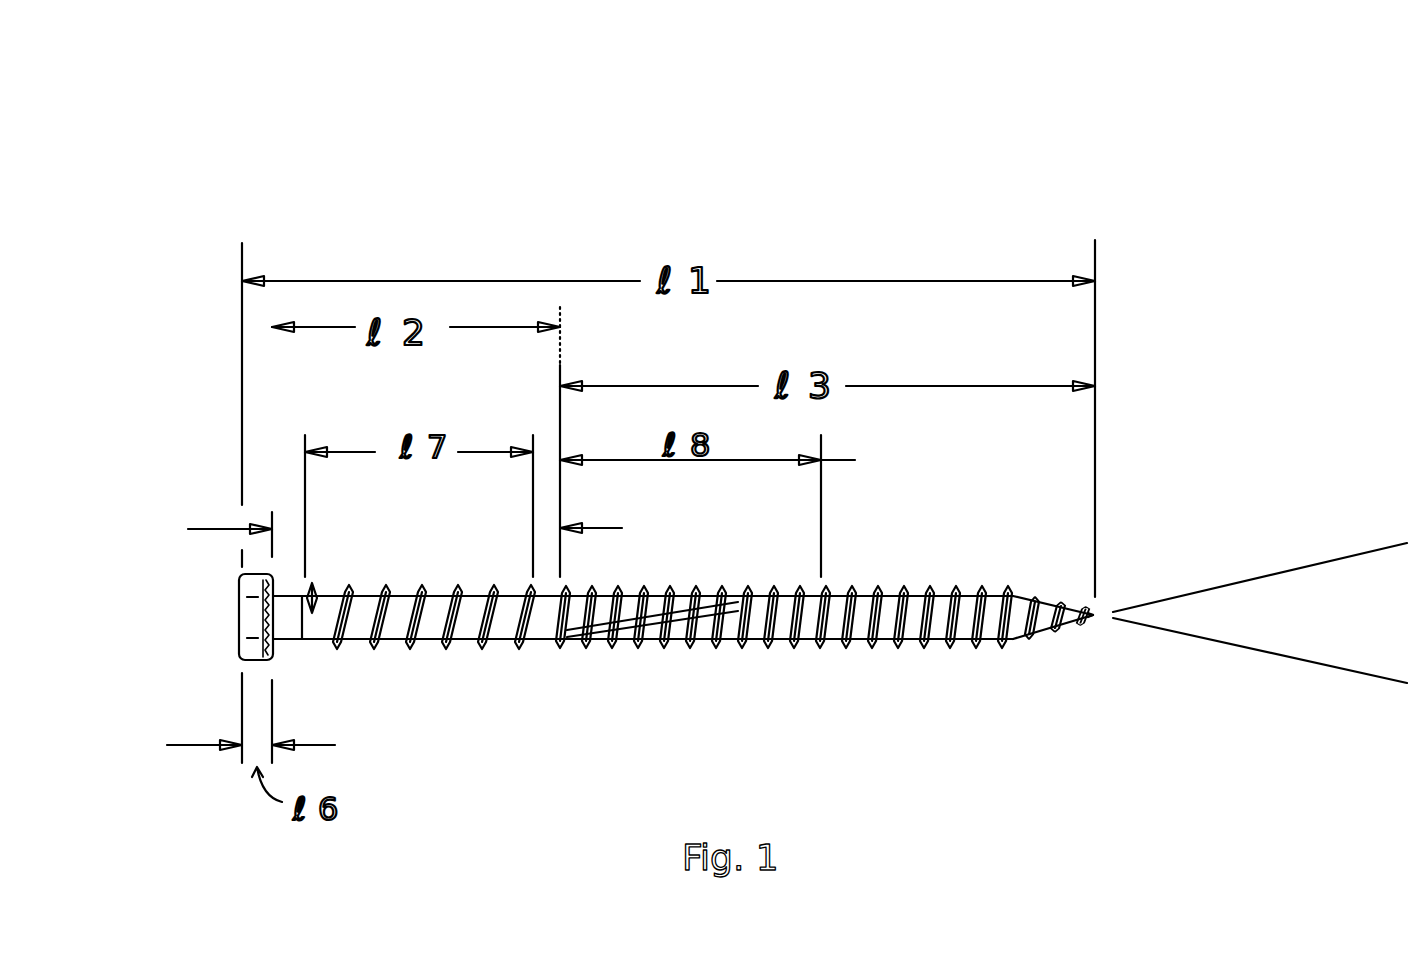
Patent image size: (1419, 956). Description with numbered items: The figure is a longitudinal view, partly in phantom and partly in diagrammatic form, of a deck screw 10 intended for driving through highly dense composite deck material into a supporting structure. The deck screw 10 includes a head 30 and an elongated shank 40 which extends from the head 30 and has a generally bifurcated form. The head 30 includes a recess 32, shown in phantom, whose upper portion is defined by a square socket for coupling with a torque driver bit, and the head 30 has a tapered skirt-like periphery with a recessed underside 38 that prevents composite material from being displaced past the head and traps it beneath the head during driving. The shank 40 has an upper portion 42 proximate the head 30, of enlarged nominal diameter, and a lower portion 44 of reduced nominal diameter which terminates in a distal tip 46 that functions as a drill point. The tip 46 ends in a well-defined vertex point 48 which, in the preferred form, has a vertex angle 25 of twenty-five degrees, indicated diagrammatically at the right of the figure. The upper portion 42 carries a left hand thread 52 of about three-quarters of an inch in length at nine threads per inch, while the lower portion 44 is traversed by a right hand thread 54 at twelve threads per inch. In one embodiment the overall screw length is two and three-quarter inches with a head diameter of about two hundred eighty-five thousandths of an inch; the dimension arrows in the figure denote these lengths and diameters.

The deck screw 10 is at (598, 207).
The head 30 is at (252, 588).
The recess 32 is at (248, 618).
The recessed underside 38 is at (275, 652).
The elongated shank 40 is at (377, 572).
The upper portion 42 is at (430, 625).
The lower portion 44 is at (840, 607).
The distal tip 46 is at (1085, 595).
The vertex point 48 is at (1093, 618).
The left hand thread 52 is at (373, 648).
The right hand thread 54 is at (910, 648).
The vertex angle 25 is at (1393, 547).